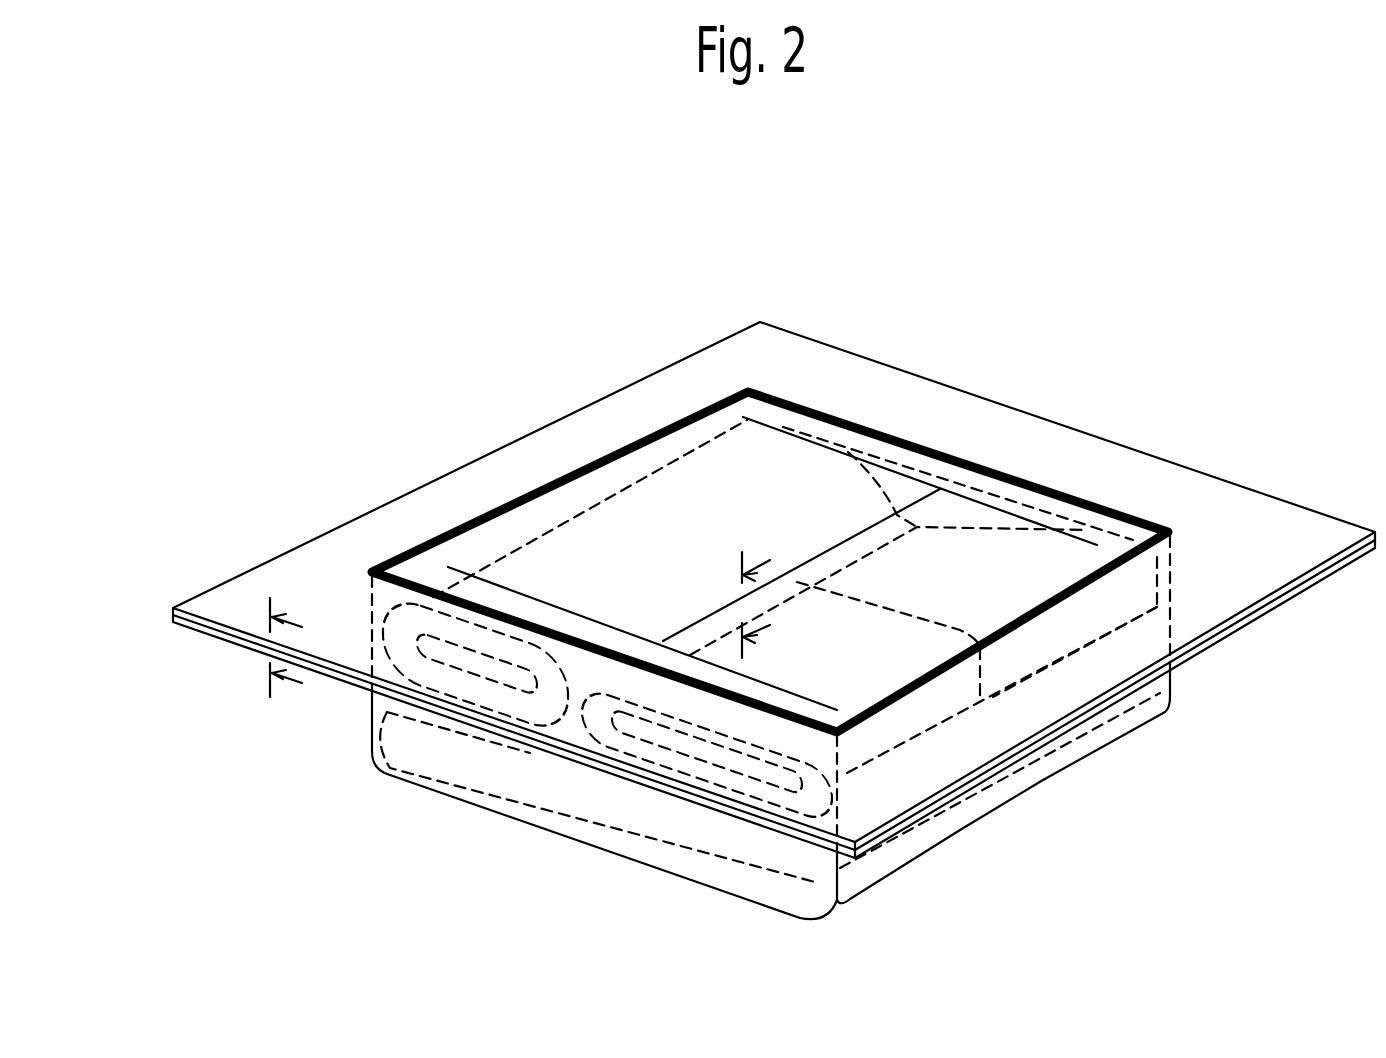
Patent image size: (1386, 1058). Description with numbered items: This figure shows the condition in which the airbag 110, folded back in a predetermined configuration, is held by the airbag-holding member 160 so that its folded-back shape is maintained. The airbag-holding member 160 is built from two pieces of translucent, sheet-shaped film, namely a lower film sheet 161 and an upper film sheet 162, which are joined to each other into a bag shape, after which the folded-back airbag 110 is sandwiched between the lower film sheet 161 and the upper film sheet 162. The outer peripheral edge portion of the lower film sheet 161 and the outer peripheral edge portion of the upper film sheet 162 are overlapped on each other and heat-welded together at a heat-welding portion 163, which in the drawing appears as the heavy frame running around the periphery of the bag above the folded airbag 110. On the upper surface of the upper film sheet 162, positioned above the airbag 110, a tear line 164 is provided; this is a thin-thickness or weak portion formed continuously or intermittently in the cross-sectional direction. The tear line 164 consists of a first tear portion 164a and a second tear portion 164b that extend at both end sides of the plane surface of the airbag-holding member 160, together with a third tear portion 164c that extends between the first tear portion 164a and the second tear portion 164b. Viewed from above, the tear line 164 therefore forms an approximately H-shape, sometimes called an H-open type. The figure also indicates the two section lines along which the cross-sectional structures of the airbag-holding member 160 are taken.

The airbag 110 is at (1072, 669).
The airbag-holding member 160 is at (743, 554).
The lower film sheet 161 is at (217, 638).
The upper film sheet 162 is at (213, 608).
The heat-welding portion 163 is at (427, 547).
The tear line 164 is at (772, 464).
The first tear portion 164a is at (543, 600).
The second tear portion 164b is at (785, 433).
The third tear portion 164c is at (707, 615).